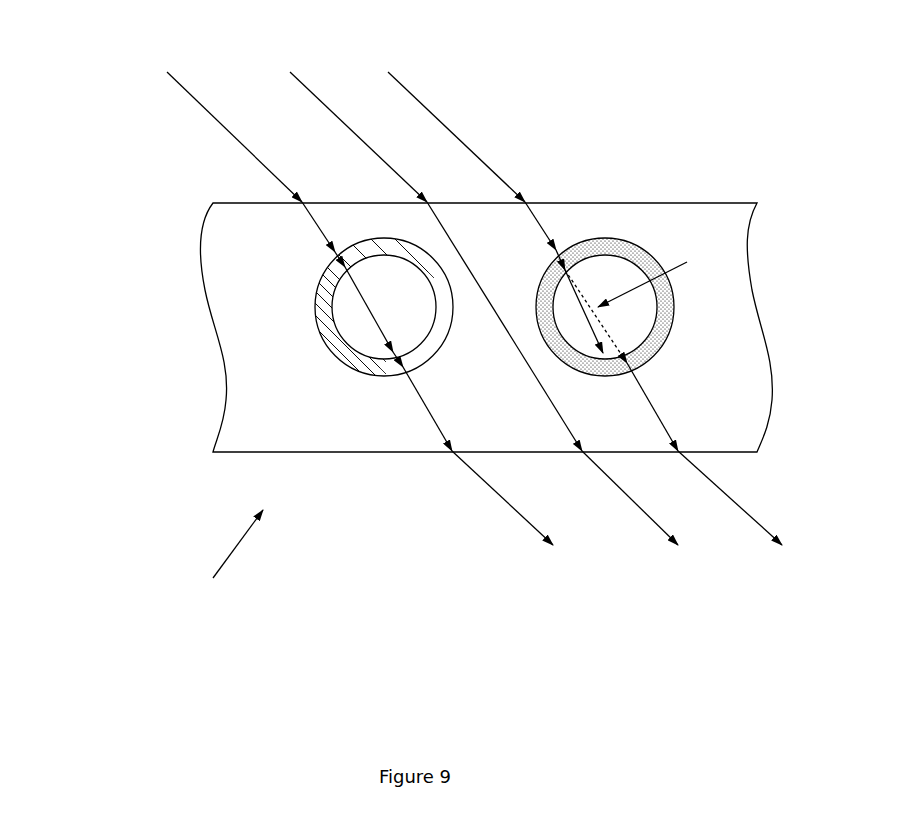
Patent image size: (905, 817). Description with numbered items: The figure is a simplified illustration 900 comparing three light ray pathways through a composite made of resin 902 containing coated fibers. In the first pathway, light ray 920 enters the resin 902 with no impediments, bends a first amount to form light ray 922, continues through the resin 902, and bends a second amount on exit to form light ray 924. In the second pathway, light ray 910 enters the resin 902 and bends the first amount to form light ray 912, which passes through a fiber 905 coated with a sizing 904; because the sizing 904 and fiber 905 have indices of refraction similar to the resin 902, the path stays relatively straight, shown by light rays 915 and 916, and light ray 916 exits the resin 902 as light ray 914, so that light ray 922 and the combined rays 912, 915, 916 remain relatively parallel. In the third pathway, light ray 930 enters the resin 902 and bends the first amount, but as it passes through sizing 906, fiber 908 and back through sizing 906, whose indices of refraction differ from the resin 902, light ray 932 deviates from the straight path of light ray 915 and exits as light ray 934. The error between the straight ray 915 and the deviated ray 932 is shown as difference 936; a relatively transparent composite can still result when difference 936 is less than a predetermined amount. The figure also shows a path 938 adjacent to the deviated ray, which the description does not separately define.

The simplified illustration 900 is at (219, 562).
The resin 902 is at (762, 203).
The sizing 904 is at (327, 350).
The fiber 905 is at (317, 318).
The sizing 906 is at (607, 243).
The fiber 908 is at (662, 303).
The light ray 910 is at (182, 88).
The light ray 912 is at (313, 222).
The light ray 914 is at (487, 480).
The light ray 915 is at (378, 333).
The light ray 916 is at (415, 390).
The light ray 920 is at (307, 88).
The light ray 922 is at (580, 323).
The light ray 924 is at (603, 477).
The light ray 930 is at (417, 98).
The light ray 932 is at (545, 282).
The light ray 934 is at (715, 482).
The difference 936 is at (661, 275).
The alternative (dashed) beam path 938 is at (576, 288).